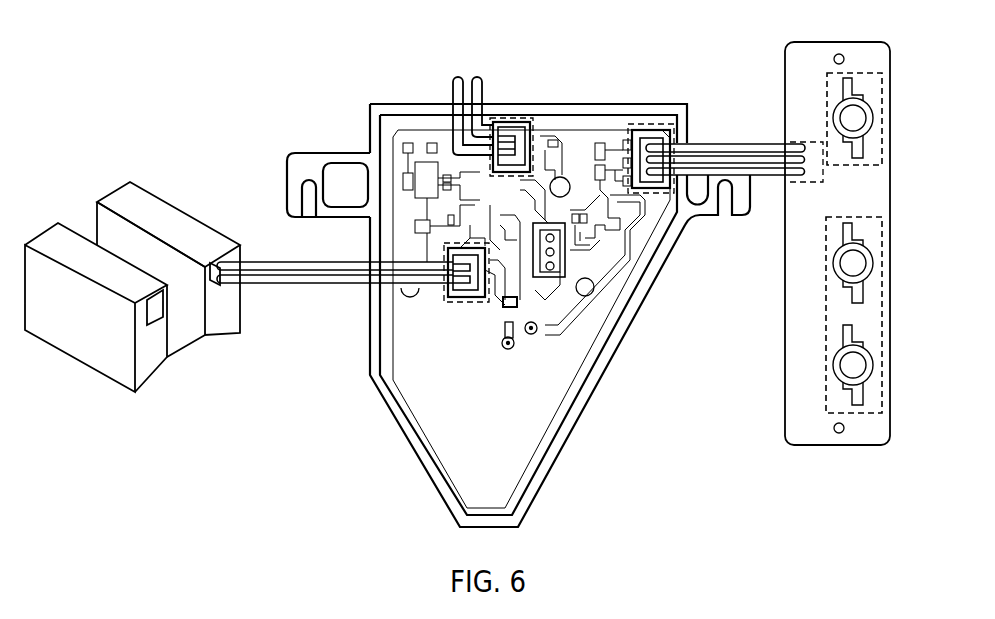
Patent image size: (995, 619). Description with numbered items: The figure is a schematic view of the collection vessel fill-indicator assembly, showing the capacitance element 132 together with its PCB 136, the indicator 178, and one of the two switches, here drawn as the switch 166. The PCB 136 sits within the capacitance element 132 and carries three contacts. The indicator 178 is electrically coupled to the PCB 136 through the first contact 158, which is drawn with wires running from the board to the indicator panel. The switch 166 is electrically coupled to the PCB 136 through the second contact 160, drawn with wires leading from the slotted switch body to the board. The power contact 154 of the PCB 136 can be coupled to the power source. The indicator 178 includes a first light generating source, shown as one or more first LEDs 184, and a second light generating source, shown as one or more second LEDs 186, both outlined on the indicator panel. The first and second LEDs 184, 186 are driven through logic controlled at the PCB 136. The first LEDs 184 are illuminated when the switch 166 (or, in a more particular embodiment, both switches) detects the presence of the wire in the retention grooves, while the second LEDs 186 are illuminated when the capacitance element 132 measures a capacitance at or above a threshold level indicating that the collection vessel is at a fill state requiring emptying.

The capacitance element 132 is at (420, 403).
The PCB 136 is at (400, 150).
The power contact 154 is at (518, 122).
The first contact 158 is at (650, 127).
The second contact 160 is at (448, 288).
The switch 166 is at (115, 365).
The indicator 178 is at (802, 435).
The first LEDs 184 is at (883, 132).
The second LEDs 186 is at (882, 325).